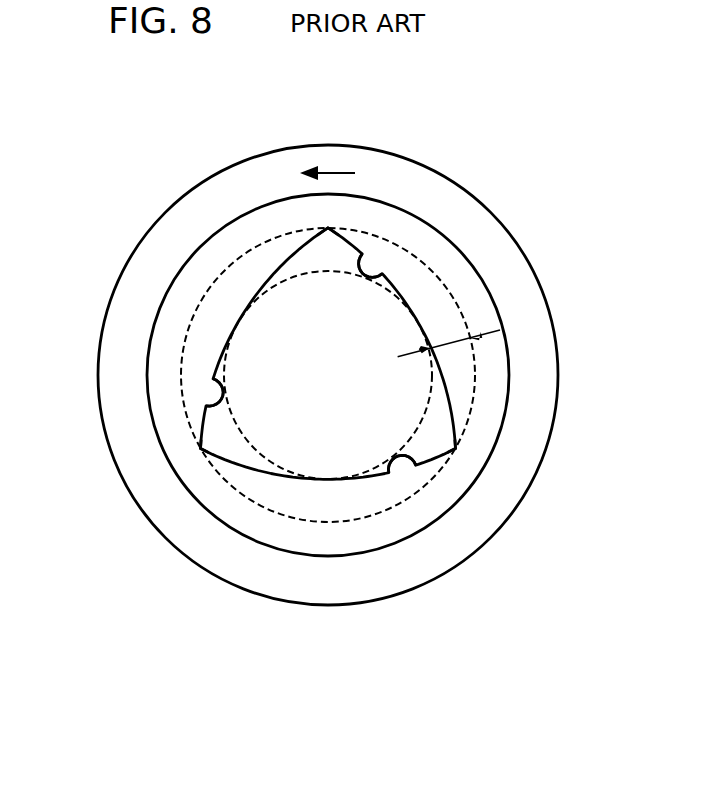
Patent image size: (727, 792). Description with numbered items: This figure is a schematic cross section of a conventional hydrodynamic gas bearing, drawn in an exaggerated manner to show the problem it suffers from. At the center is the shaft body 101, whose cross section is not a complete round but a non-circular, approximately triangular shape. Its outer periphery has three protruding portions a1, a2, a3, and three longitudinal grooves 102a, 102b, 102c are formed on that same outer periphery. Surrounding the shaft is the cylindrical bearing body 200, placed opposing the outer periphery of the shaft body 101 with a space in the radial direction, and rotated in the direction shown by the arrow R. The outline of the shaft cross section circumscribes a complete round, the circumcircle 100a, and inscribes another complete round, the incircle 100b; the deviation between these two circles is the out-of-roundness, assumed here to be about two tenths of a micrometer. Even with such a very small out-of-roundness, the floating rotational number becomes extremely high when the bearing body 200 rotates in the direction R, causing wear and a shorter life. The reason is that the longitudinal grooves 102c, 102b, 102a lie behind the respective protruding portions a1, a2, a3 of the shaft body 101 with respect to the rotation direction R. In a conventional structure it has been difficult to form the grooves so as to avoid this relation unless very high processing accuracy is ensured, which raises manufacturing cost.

The bearing body 200 is at (556, 424).
The circumcircle 100a is at (260, 245).
The incircle 100b is at (280, 285).
The shaft body 101 is at (387, 465).
The longitudinal groove 102a is at (392, 458).
The longitudinal groove 102b is at (218, 387).
The longitudinal groove 102c is at (362, 267).
The protruding portion a1 is at (328, 229).
The protruding portion a2 is at (202, 455).
The protruding portion a3 is at (457, 449).
The direction of rotation R is at (341, 176).